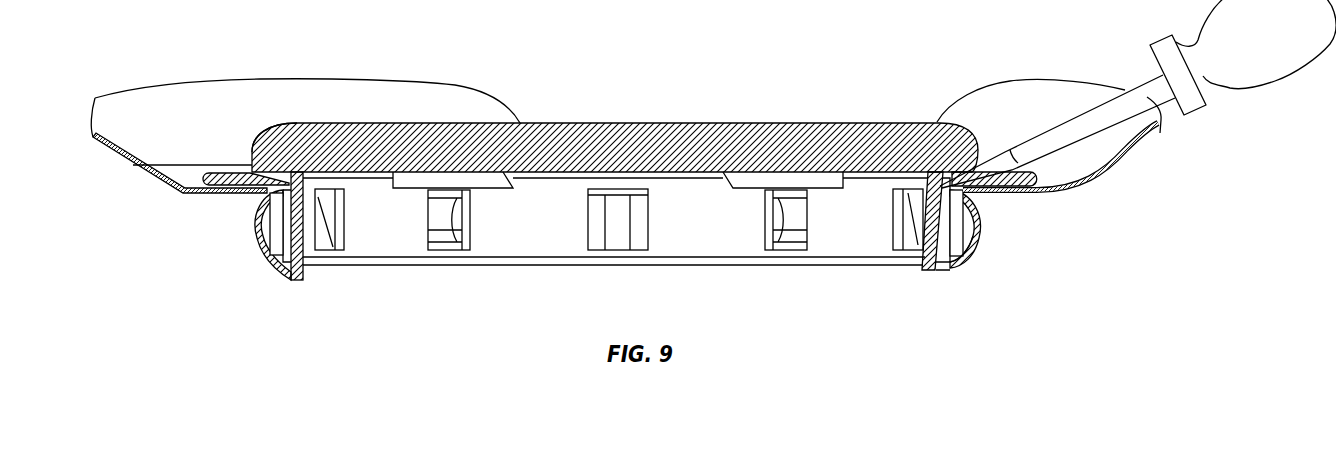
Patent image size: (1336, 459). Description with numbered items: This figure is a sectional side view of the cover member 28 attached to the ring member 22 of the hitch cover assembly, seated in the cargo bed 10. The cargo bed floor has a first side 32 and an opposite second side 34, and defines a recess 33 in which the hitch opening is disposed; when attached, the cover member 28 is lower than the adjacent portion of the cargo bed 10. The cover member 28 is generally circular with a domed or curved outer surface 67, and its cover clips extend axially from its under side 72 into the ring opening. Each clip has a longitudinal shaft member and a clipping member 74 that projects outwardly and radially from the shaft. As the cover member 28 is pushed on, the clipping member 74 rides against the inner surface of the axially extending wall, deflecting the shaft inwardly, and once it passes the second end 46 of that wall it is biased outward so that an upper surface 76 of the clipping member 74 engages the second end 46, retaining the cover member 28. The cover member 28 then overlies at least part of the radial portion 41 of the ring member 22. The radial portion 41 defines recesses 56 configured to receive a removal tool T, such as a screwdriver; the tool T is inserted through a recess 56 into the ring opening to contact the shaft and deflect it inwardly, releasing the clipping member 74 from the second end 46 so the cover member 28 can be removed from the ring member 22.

The cargo bed 10 is at (1038, 192).
The ring member 22 is at (667, 240).
The cover member 28 is at (898, 122).
The first side 32 is at (134, 165).
The recess 33 is at (168, 185).
The second side 34 is at (237, 198).
The radial portion 41 is at (1062, 183).
The second end 46 is at (958, 258).
The recesses 56 is at (282, 183).
The outer surface 67 is at (281, 132).
The under side 72 is at (861, 172).
The clipping member 74 is at (931, 268).
The upper surface 76 is at (974, 232).
The removal tool T is at (1276, 41).